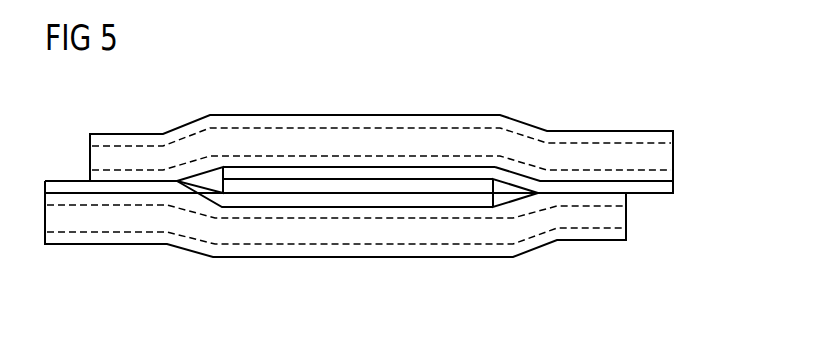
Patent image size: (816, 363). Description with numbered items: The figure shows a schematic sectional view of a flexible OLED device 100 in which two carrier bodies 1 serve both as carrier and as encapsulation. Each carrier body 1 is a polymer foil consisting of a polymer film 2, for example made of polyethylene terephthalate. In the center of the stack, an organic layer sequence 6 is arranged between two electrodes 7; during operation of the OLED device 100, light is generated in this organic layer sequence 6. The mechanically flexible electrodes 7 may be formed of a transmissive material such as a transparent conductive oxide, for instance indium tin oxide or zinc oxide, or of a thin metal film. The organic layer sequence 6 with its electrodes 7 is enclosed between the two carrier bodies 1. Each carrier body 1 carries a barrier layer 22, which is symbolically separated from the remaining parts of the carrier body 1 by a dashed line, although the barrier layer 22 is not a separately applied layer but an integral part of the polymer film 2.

The OLED device 100 is at (616, 82).
The carrier body 1 is at (442, 138).
The polymer film 2 is at (447, 238).
The organic layer sequence 6 is at (348, 188).
The electrodes 7 is at (67, 188).
The barrier layer 22 is at (674, 134).